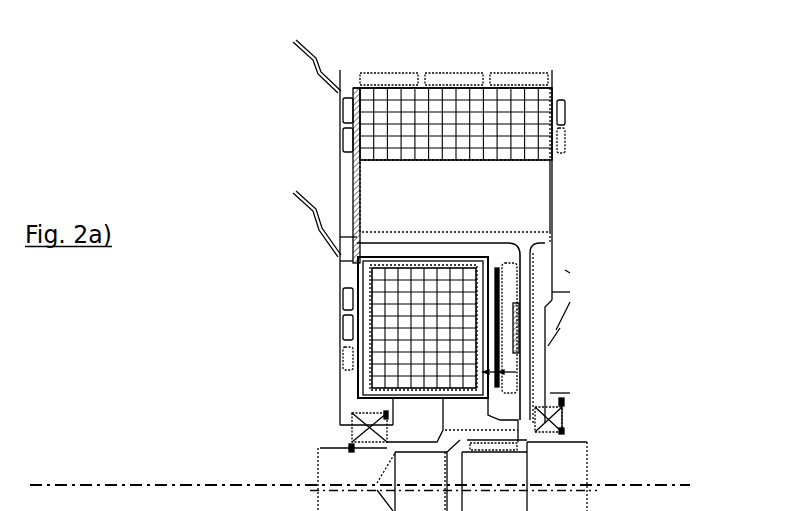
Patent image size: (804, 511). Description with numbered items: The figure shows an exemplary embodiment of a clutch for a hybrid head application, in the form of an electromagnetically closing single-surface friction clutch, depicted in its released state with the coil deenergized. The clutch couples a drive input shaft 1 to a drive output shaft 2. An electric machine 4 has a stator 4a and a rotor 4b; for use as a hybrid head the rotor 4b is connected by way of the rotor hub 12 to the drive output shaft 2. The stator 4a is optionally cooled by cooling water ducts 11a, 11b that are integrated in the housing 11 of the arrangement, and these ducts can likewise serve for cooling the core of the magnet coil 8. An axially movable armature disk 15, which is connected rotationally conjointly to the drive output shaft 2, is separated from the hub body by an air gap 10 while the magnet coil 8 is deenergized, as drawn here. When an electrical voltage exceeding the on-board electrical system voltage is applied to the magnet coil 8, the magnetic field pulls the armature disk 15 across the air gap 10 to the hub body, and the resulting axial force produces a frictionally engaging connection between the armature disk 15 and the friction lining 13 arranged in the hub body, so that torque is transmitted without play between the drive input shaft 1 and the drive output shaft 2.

The drive input shaft 1 is at (340, 465).
The drive output shaft 2 is at (562, 462).
The electric machine 4 is at (702, 72).
The stator 4a is at (522, 142).
The rotor 4b is at (523, 193).
The magnet coil 8 is at (390, 372).
The air gap 10 is at (533, 360).
The housing 11 is at (347, 185).
The cooling water duct 11a is at (537, 78).
The cooling water duct 11b is at (348, 323).
The rotor hub 12 is at (523, 243).
The friction lining 13 is at (497, 292).
The armature disk 15 is at (509, 342).